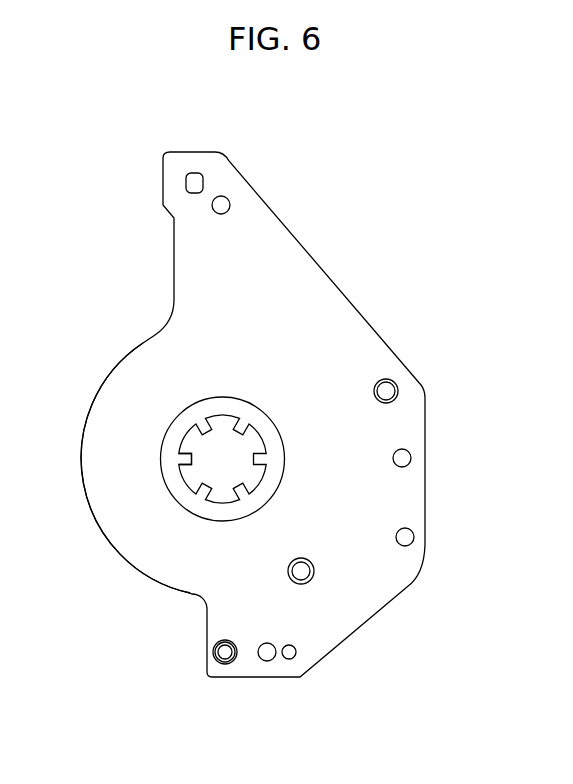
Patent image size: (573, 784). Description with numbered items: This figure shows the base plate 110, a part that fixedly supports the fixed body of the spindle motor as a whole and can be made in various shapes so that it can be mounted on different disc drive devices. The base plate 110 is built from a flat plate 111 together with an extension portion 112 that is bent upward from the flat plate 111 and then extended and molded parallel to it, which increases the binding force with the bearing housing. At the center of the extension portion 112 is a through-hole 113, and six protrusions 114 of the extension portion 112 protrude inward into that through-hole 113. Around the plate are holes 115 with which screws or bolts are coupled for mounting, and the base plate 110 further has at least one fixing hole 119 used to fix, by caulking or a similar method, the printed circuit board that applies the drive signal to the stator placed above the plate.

The base plate 110 is at (376, 318).
The flat plate 111 is at (177, 572).
The extension portion 112 is at (190, 507).
The through-hole 113 is at (191, 464).
The protrusions 114 is at (192, 460).
The holes 115 is at (414, 537).
The fixing hole 119 is at (224, 664).